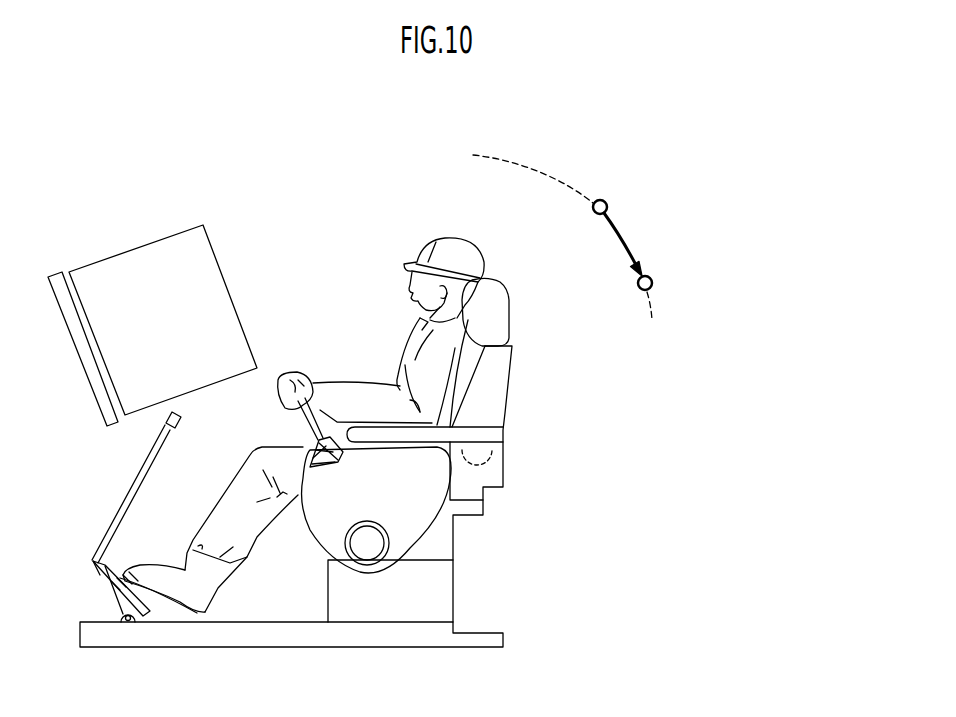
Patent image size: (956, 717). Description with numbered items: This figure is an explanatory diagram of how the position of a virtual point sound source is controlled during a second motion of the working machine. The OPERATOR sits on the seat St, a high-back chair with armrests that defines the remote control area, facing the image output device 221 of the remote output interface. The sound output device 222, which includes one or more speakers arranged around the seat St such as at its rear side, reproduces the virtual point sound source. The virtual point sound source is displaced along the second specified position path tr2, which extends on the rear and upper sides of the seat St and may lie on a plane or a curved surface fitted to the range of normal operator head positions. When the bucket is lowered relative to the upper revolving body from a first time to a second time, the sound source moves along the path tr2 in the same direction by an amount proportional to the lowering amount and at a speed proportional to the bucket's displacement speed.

The image output device 221 is at (266, 323).
The sound output device 222 is at (508, 448).
The seat St is at (511, 415).
The second specified position path tr2 is at (541, 152).
The operator OPERATOR is at (382, 281).